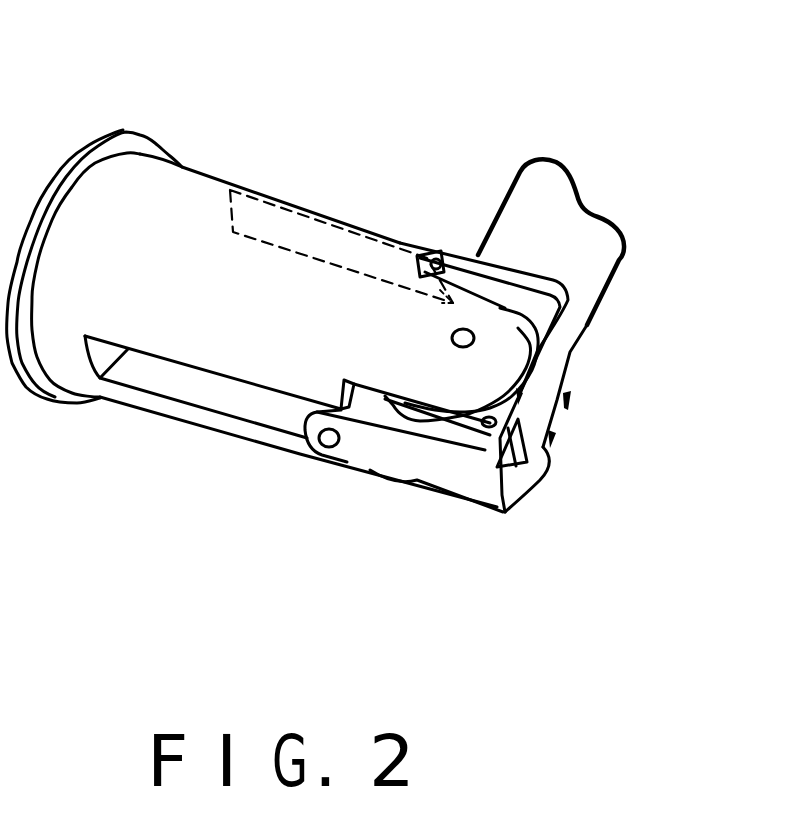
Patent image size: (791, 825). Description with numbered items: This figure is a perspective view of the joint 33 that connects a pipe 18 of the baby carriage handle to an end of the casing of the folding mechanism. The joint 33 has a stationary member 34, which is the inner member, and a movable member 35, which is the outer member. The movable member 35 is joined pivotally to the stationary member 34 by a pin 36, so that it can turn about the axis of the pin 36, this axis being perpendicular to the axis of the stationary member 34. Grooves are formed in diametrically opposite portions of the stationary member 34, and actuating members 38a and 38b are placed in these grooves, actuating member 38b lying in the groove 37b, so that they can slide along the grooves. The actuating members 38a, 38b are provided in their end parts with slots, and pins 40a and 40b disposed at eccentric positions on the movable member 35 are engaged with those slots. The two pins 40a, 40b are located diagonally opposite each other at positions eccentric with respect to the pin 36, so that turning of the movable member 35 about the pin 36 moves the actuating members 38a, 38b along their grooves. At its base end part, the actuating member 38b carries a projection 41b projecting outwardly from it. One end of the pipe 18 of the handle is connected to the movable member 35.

The joint 33 is at (282, 175).
The stationary member 34 is at (143, 327).
The groove 37b is at (237, 405).
The actuating member 38a is at (385, 394).
The pin 40a is at (437, 255).
The pipe 18 is at (593, 250).
The movable member 35 is at (547, 321).
The pin 36 is at (475, 338).
The projection 41b is at (322, 452).
The actuating member 38b is at (378, 457).
The pin 40b is at (488, 427).